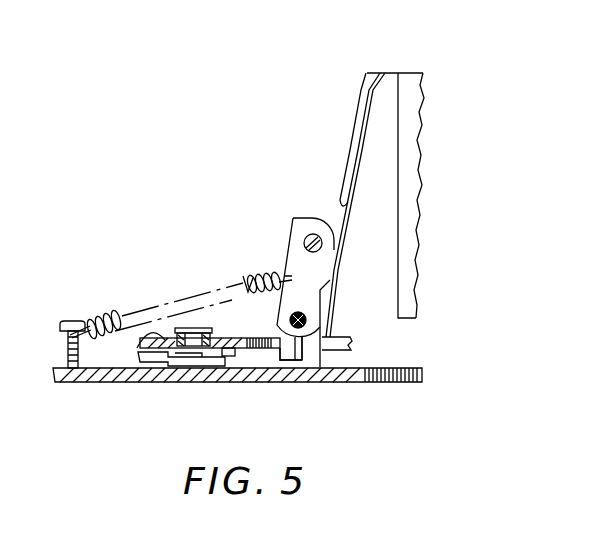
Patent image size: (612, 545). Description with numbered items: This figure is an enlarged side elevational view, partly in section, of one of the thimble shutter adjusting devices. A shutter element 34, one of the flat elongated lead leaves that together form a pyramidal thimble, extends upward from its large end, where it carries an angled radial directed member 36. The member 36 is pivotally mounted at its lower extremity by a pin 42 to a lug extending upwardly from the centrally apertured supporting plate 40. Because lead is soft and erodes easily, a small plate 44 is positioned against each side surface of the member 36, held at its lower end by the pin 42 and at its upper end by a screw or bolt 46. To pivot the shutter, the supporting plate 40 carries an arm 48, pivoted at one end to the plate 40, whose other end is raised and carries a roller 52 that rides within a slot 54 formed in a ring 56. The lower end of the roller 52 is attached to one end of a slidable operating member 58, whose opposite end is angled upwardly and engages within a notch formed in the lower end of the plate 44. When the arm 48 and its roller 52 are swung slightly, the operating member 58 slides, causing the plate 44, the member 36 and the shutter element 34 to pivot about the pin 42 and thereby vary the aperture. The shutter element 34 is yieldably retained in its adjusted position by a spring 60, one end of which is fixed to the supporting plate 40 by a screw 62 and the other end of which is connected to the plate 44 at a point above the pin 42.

The shutter element 34 is at (374, 100).
The angled radial directed member 36 is at (297, 216).
The supporting plate 40 is at (237, 396).
The pin 42 is at (300, 311).
The small plate 44 is at (292, 268).
The screw or bolt 46 is at (323, 246).
The arm 48 is at (131, 382).
The roller 52 is at (210, 329).
The slot 54 is at (140, 338).
The ring 56 is at (230, 381).
The slidable operating member 58 is at (280, 382).
The spring 60 is at (103, 318).
The screw 62 is at (68, 352).